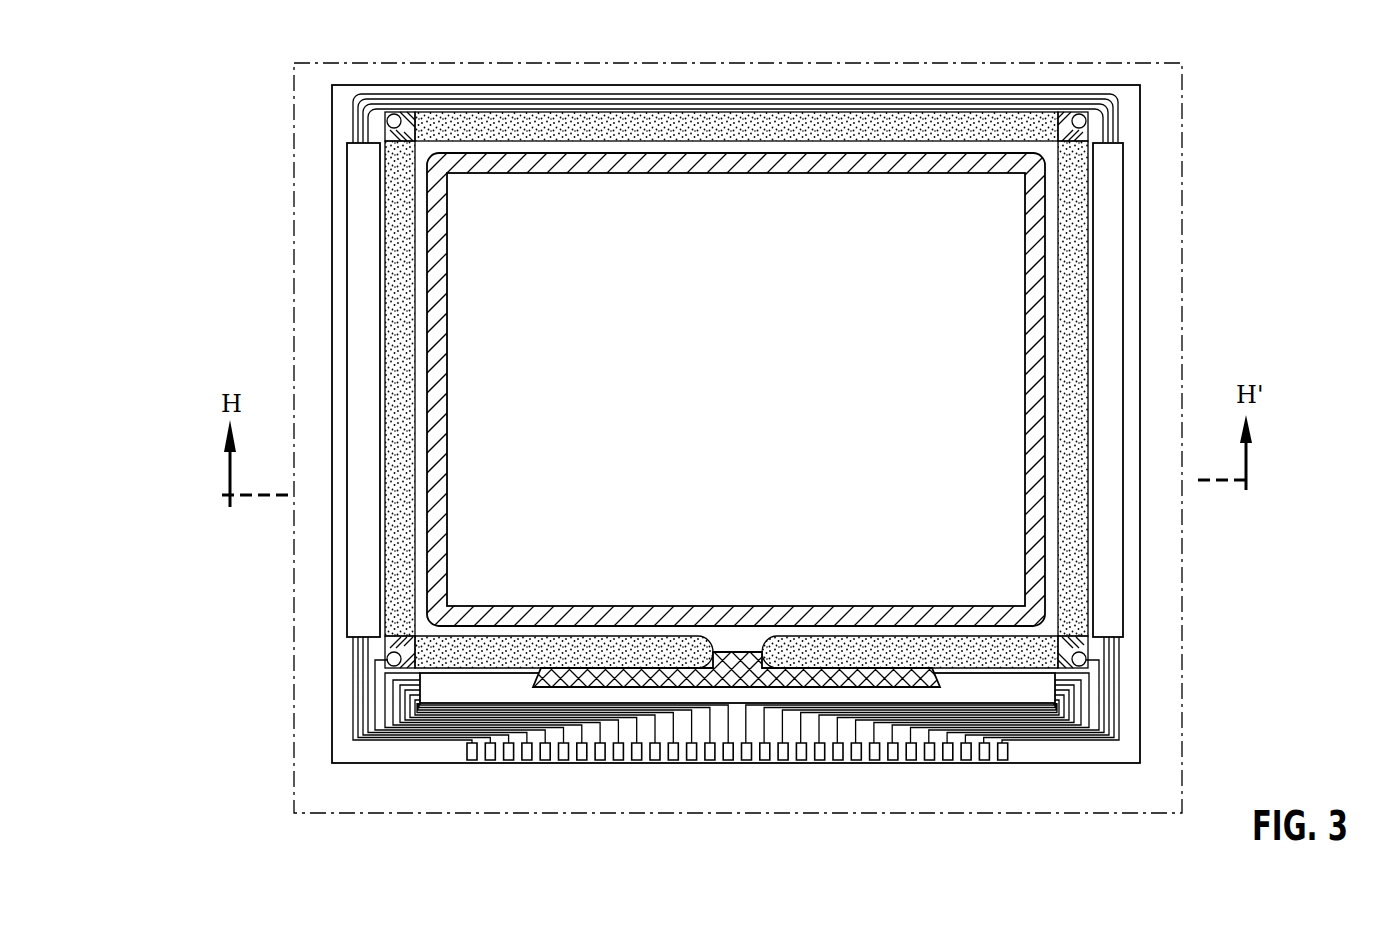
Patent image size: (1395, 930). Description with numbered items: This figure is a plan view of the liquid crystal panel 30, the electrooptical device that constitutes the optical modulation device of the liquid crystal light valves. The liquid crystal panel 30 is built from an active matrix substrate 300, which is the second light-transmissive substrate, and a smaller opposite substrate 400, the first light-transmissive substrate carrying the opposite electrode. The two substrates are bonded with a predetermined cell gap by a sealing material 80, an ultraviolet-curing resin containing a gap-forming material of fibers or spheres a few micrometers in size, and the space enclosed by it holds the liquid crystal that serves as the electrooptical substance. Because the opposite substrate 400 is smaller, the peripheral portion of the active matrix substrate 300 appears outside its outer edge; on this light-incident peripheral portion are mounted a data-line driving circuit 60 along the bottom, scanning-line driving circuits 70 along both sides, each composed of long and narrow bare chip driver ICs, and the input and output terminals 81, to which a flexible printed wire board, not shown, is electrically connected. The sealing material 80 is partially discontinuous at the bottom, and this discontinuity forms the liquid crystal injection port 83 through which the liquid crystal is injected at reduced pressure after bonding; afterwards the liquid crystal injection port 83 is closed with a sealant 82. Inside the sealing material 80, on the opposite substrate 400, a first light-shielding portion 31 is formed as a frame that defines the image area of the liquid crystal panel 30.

The liquid crystal panel 30 is at (1224, 74).
The active matrix substrate 300 is at (367, 765).
The opposite substrate 400 is at (794, 101).
The scanning-line driving circuit 70 is at (358, 247).
The sealing material 80 is at (736, 347).
The sealant 82 is at (642, 648).
The liquid crystal injection port 83 is at (739, 650).
The first light-shielding portion 31 is at (918, 614).
The data-line driving circuit 60 is at (486, 688).
The input and output terminals 81 is at (1020, 768).